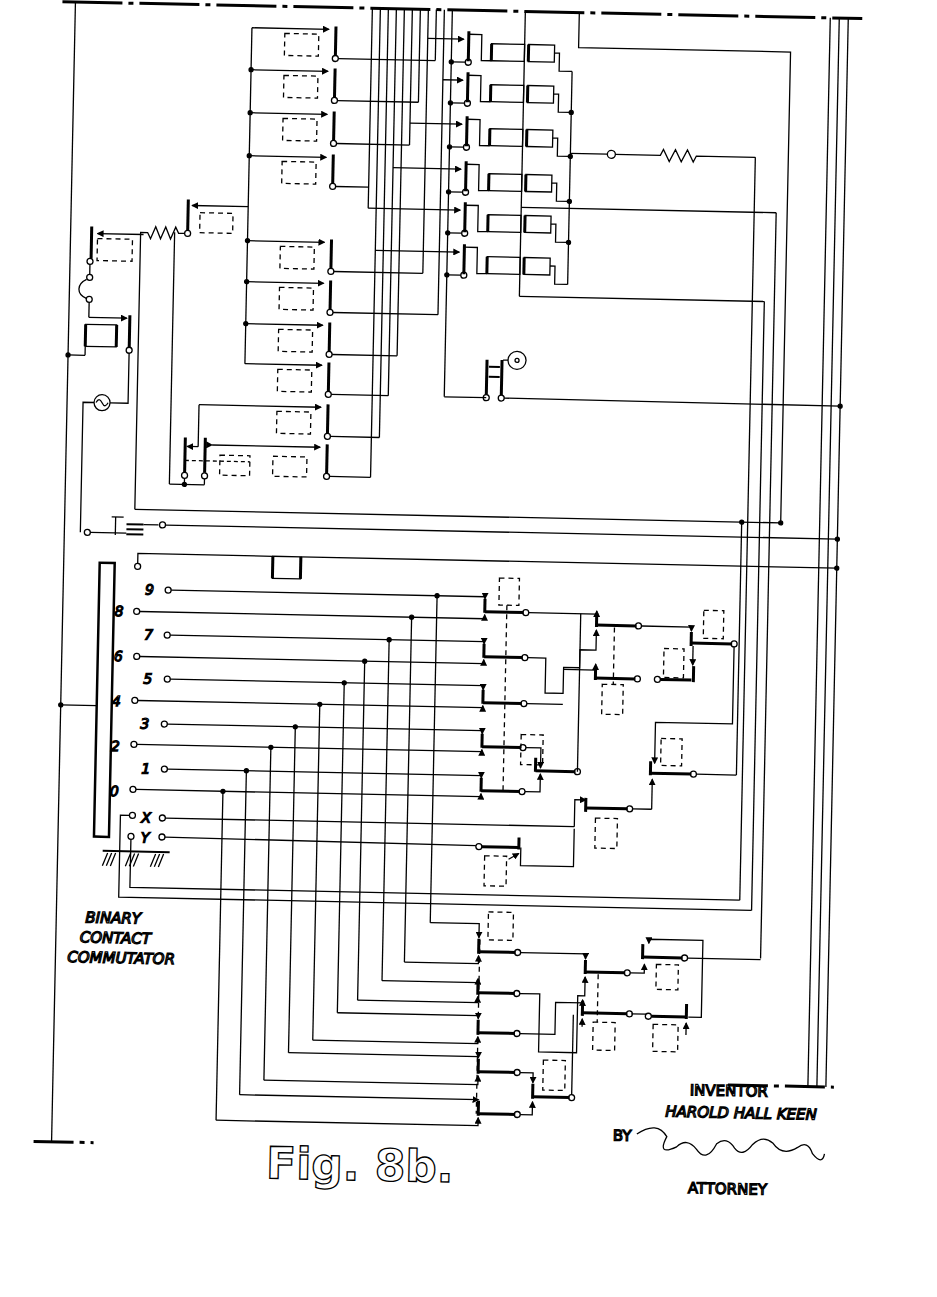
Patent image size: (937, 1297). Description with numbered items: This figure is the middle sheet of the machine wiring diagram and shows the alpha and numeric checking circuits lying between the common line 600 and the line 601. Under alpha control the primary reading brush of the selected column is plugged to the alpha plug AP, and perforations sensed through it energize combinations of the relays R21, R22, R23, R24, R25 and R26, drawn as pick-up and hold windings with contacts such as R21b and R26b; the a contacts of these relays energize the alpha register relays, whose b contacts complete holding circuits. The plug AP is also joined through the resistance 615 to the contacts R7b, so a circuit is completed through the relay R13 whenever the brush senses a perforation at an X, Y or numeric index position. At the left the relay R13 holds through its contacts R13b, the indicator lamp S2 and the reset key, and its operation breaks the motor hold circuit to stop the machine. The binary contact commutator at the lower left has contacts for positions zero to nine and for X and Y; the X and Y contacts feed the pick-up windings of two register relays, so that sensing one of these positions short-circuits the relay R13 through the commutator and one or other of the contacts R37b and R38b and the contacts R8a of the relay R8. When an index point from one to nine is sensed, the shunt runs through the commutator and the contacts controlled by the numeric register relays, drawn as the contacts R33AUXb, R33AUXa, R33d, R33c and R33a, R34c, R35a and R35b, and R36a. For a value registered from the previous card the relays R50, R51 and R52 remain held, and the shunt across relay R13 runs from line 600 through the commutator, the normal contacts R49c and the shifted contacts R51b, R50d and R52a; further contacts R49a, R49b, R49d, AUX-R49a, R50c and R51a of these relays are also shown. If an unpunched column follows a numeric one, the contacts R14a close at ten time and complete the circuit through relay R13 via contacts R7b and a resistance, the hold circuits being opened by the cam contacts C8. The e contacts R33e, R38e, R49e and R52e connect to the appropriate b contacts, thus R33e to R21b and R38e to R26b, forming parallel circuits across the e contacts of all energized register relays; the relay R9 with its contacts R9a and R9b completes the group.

The line 600 is at (65, 102).
The line/switch 601 is at (838, 32).
The resistance 615 is at (667, 148).
The alpha plug AP is at (606, 150).
The cam contacts C8 is at (503, 382).
The indicator lamp S2 is at (95, 418).
The contacts of relay R7 R7b is at (87, 238).
The relay R8 is at (664, 750).
The contacts of relay R8 R8a is at (655, 779).
The relay R9 is at (233, 481).
The relay contact R9a is at (184, 438).
The relay contact R9b is at (204, 446).
The relay R13 is at (104, 354).
The contacts of relay R13 R13b is at (126, 321).
The contacts of relay R14 R14a is at (217, 207).
The relay R21 is at (560, 54).
The contacts of relay R21 R21b is at (490, 27).
The relay R22 is at (548, 98).
The relay R23 is at (550, 141).
The relay R24 is at (548, 186).
The relay R25 is at (548, 229).
The relay R26 is at (550, 268).
The contacts of relay R26 R26b is at (460, 275).
The relay contact R33a is at (483, 791).
The relay contact R33c is at (483, 746).
The relay contact R33d is at (483, 698).
The contacts of relay R33 R33e is at (376, 257).
The relay contact R33 AUX a R33AUXa is at (488, 646).
The relay contact R33 AUX b R33AUXb is at (485, 596).
The relay contact R34c is at (598, 674).
The relay contact R35a is at (700, 678).
The relay contact R35b is at (538, 768).
The relay contact R36a is at (692, 624).
The contacts of relay R37 R37b is at (585, 805).
The contacts of relay R38 R38b is at (540, 848).
The contacts of relay R38 R38e is at (326, 462).
The relay contact R49a is at (482, 1116).
The relay contact R49b is at (484, 950).
The contacts of relay R49 R49c is at (484, 1074).
The relay contact R49d is at (448, 1020).
The contacts of relay R49 R49e is at (384, 44).
The relay contact AUX R49a AUX-R49a is at (482, 994).
The relay R50 is at (612, 1048).
The relay contact R50c is at (606, 1008).
The contacts of relay R50 R50d is at (593, 969).
The relay R51 is at (565, 1090).
The relay contact R51a is at (700, 1014).
The contacts of relay R51 R51b is at (540, 1102).
The relay R52 is at (291, 188).
The contacts of relay R52 R52a is at (651, 942).
The contacts of relay R52 R52e is at (355, 172).